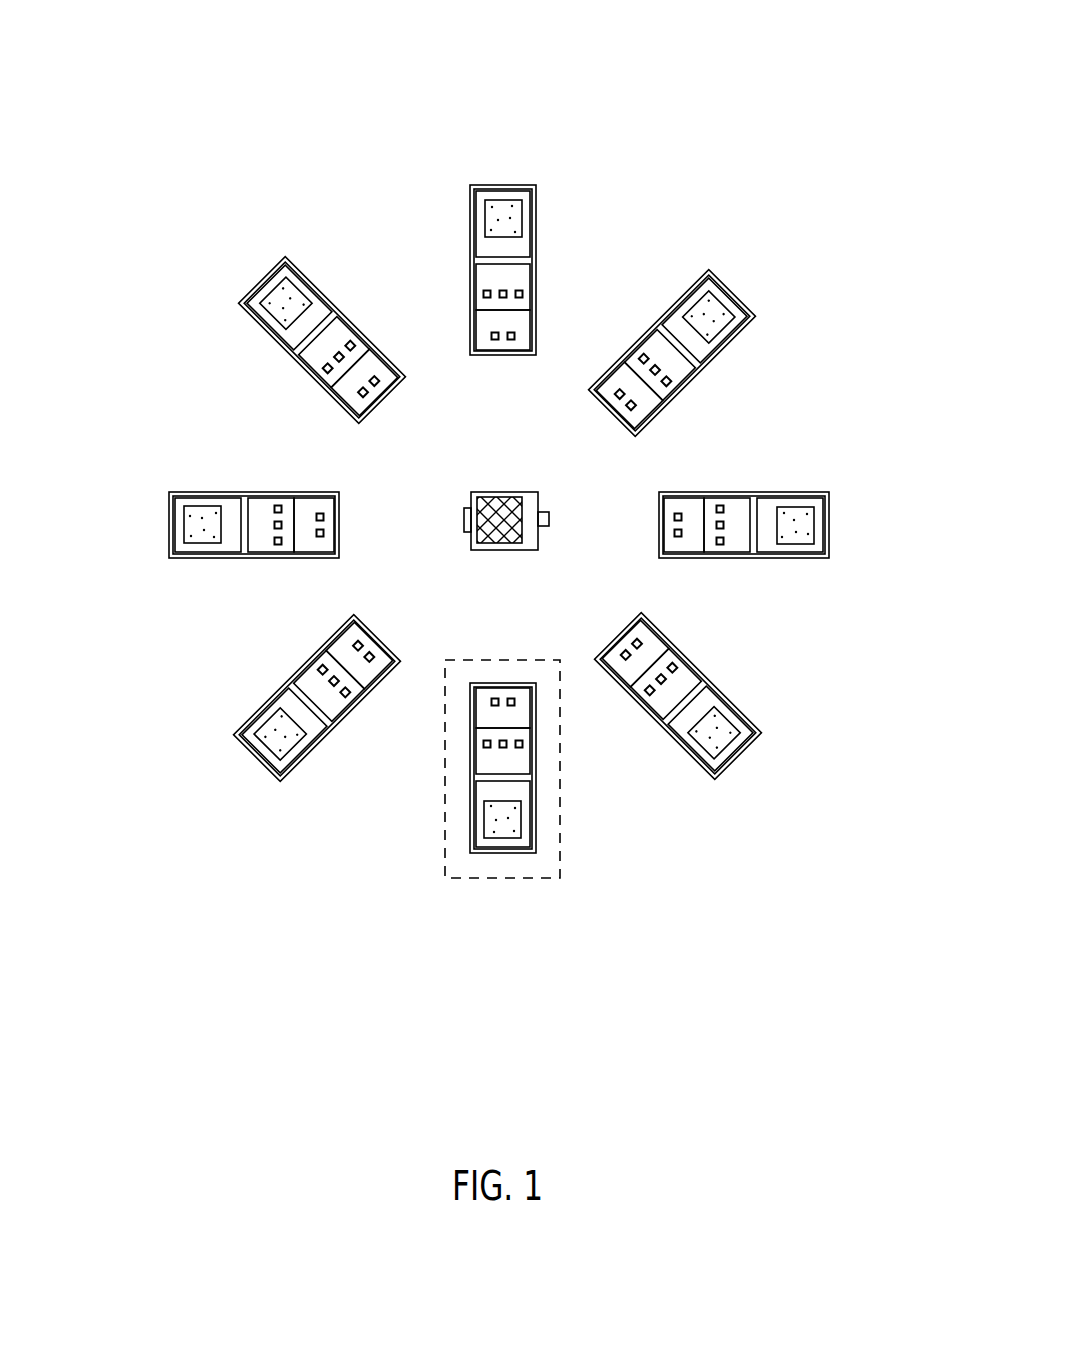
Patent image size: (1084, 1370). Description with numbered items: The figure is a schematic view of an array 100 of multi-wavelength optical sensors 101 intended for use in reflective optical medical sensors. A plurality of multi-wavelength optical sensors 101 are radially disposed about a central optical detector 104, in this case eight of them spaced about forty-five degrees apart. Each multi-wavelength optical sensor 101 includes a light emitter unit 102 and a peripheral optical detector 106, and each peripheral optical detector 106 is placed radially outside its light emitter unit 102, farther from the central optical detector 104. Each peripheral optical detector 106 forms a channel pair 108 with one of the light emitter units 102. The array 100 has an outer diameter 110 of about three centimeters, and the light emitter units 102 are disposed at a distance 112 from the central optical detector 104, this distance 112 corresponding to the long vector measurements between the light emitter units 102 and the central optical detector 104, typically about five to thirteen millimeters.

The array 100 is at (336, 68).
The multi-wavelength optical sensor 101 is at (556, 236).
The light emitter unit 102 is at (520, 285).
The central optical detector 104 is at (530, 492).
The peripheral optical detector 106 is at (508, 220).
The channel pair 108 is at (563, 826).
The outer diameter 110 is at (828, 1013).
The distance 112 is at (503, 486).